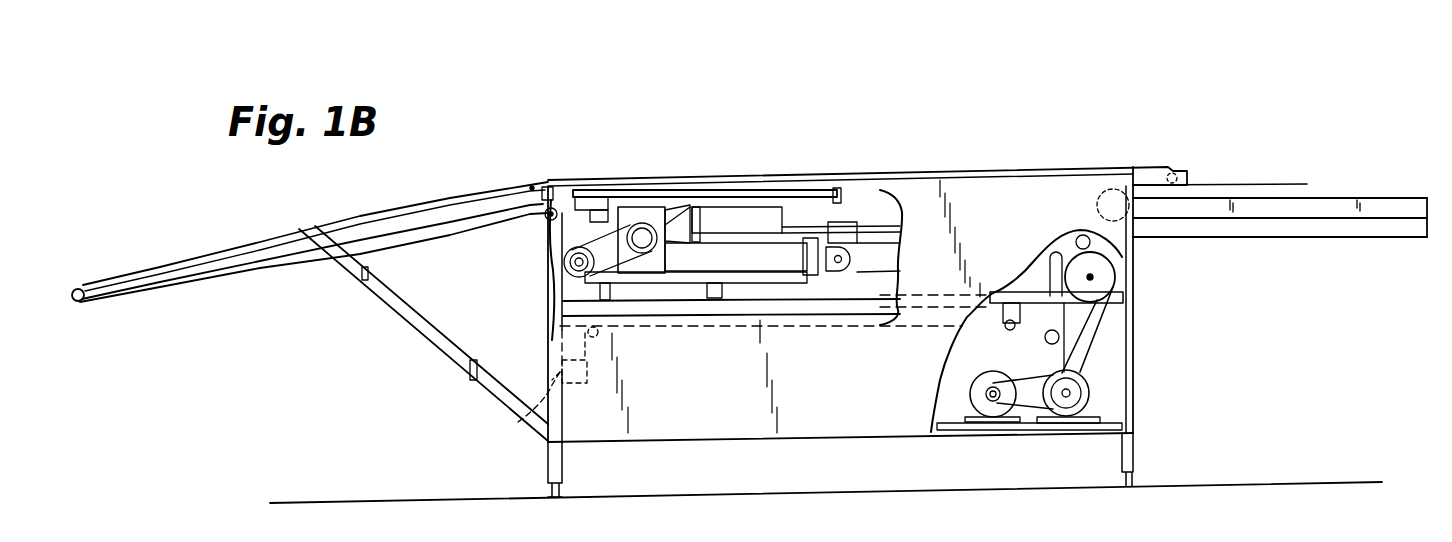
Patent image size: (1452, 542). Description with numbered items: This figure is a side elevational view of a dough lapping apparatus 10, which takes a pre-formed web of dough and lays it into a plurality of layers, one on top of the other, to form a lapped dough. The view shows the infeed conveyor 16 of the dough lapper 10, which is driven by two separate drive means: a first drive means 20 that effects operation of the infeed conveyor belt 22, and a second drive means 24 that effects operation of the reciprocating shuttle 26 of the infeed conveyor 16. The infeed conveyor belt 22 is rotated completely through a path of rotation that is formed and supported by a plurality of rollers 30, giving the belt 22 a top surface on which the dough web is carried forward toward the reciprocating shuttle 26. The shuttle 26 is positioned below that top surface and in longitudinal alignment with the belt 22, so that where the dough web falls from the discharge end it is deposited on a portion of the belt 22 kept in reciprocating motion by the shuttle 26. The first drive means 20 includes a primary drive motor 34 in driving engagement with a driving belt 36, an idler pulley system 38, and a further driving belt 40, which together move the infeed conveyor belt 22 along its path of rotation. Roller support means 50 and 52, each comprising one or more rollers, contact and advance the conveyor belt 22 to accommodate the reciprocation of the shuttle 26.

The dough lapping apparatus 10 is at (853, 97).
The infeed conveyor 16 is at (500, 186).
The first drive means 20 is at (1027, 447).
The infeed conveyor belt 22 is at (304, 258).
The second drive means 24 is at (655, 290).
The reciprocating shuttle 26 is at (1202, 252).
The rollers 30 is at (550, 207).
The primary drive motor 34 is at (980, 408).
The driving belt 36 is at (1033, 381).
The idler pulley system 38 is at (998, 338).
The driving belt 40 is at (1096, 350).
The roller support means 50 is at (1307, 185).
The roller support means 52 is at (1346, 238).